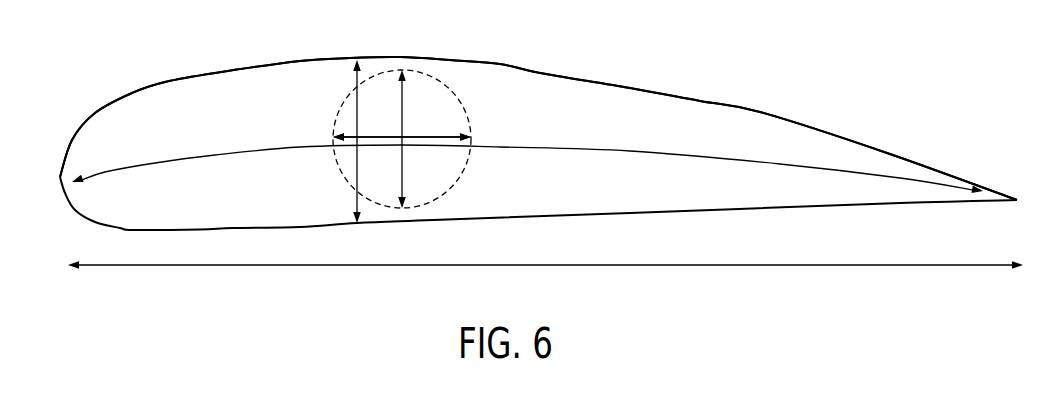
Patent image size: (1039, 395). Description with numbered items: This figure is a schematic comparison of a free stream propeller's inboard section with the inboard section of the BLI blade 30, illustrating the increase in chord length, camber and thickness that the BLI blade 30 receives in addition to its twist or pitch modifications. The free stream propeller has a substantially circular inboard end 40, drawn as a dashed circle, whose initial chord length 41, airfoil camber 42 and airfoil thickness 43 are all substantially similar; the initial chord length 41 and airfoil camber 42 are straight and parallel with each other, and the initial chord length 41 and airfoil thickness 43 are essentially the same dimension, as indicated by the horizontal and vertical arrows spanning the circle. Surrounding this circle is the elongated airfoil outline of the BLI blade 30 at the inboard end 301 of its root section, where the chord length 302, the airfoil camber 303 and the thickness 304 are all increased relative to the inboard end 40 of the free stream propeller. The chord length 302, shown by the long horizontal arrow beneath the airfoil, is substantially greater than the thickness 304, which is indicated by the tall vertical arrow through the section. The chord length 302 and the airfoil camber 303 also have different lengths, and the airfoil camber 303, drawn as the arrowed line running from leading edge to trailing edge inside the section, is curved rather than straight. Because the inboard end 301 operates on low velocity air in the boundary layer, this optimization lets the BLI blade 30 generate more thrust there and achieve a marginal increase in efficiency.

The BLI blade 30 is at (757, 113).
The inboard end 40 is at (412, 68).
The initial chord length 41 is at (437, 140).
The airfoil camber 42 is at (402, 137).
The airfoil thickness 43 is at (400, 127).
The inboard end 301 is at (259, 62).
The chord length 302 is at (689, 266).
The airfoil camber 303 is at (585, 147).
The thickness 304 is at (353, 182).